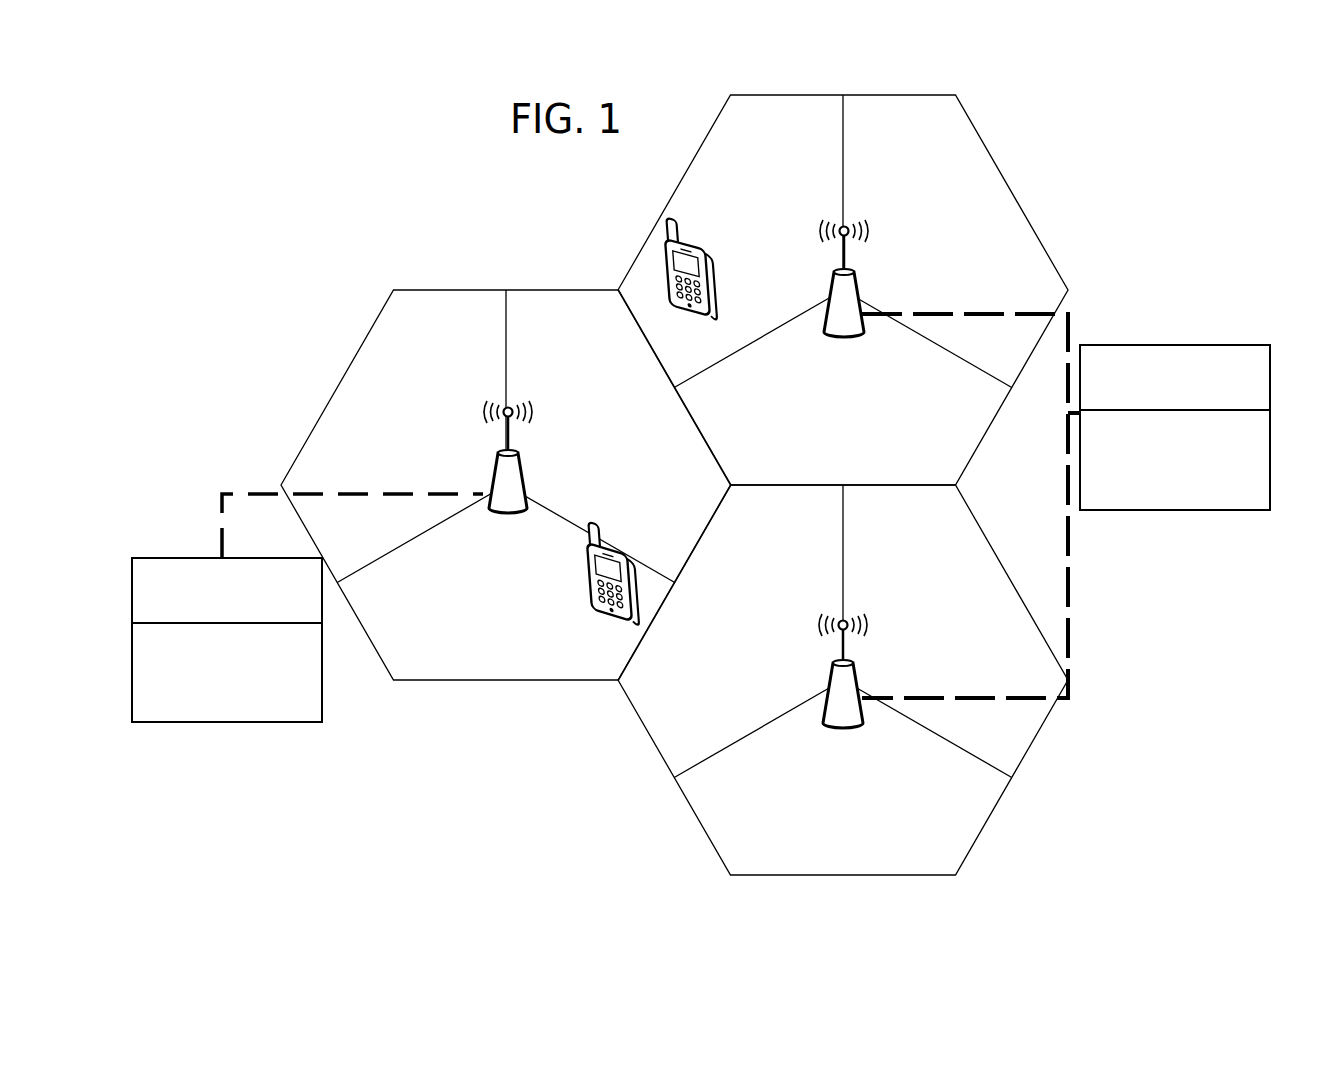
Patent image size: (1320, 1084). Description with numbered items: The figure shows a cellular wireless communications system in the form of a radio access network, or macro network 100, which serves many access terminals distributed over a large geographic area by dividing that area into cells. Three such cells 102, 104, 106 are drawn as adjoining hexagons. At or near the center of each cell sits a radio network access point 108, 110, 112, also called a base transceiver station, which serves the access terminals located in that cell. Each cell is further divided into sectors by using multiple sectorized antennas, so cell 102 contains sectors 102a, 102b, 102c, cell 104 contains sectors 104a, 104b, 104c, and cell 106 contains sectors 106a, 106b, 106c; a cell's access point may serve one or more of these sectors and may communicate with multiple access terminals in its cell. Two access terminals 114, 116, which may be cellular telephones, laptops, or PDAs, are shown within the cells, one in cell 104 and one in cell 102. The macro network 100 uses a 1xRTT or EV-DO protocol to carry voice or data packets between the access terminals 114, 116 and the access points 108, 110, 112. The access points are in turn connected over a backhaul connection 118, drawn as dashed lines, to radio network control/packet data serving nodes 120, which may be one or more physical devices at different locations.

The macro network 100 is at (441, 174).
The cell 102 is at (342, 365).
The sector 102a is at (430, 446).
The sector 102b is at (619, 446).
The sector 102c is at (483, 654).
The cell 104 is at (999, 156).
The sector 104a is at (792, 232).
The sector 104b is at (974, 251).
The sector 104c is at (834, 424).
The cell 106 is at (650, 785).
The sector 106a is at (784, 612).
The sector 106b is at (967, 642).
The sector 106c is at (821, 839).
The radio network access point 108 is at (482, 512).
The radio network access point 110 is at (822, 328).
The radio network access point 112 is at (822, 724).
The access terminal 114 is at (712, 312).
The access terminal 116 is at (588, 612).
The backhaul connection 118 is at (220, 518).
The radio network control/packet data serving node 120 is at (701, 533).